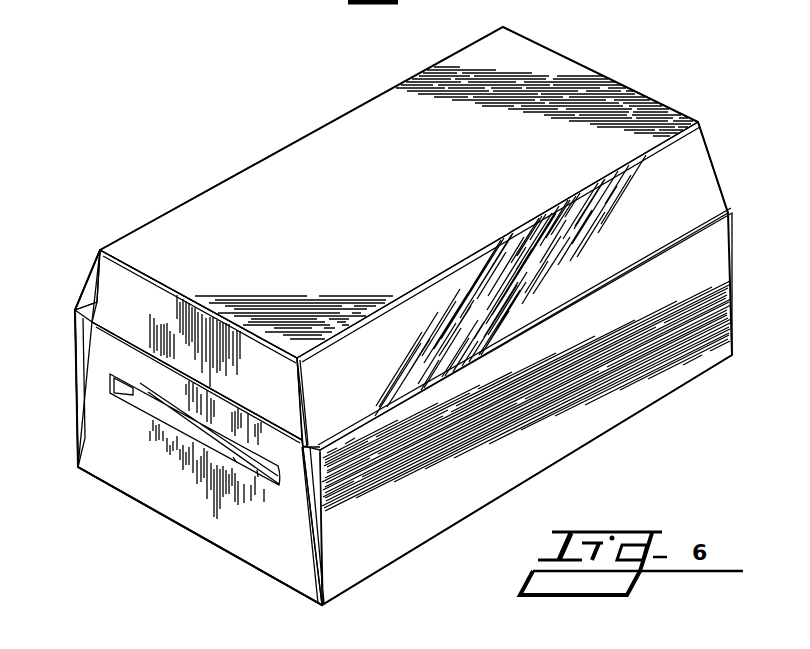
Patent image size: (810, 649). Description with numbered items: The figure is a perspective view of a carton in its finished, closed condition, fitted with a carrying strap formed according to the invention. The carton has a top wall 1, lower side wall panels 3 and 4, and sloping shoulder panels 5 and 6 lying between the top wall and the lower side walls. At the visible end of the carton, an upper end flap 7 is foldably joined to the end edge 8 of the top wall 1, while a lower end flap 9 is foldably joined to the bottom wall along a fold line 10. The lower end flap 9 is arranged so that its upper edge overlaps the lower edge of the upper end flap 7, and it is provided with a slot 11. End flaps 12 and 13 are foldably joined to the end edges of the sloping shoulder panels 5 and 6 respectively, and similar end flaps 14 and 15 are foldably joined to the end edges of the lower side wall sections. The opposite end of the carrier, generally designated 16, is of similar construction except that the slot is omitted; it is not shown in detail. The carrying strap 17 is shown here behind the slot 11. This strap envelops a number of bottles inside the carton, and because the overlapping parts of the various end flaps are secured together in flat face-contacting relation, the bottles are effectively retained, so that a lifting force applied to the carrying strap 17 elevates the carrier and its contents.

The top wall 1 is at (390, 197).
The lower side wall panel 3 is at (73, 373).
The lower side wall panel 4 is at (710, 262).
The sloping shoulder panel 5 is at (92, 268).
The sloping shoulder panel 6 is at (697, 176).
The upper end flap 7 is at (248, 363).
The end edge 8 is at (167, 287).
The lower end flap 9 is at (142, 483).
The fold line 10 is at (213, 547).
The slot 11 is at (177, 417).
The end flap 12 is at (90, 288).
The end flap 13 is at (302, 410).
The end flap 14 is at (308, 535).
The end flap 15 is at (85, 375).
The opposite end of the carrier 16 is at (639, 74).
The carrying strap 17 is at (120, 392).